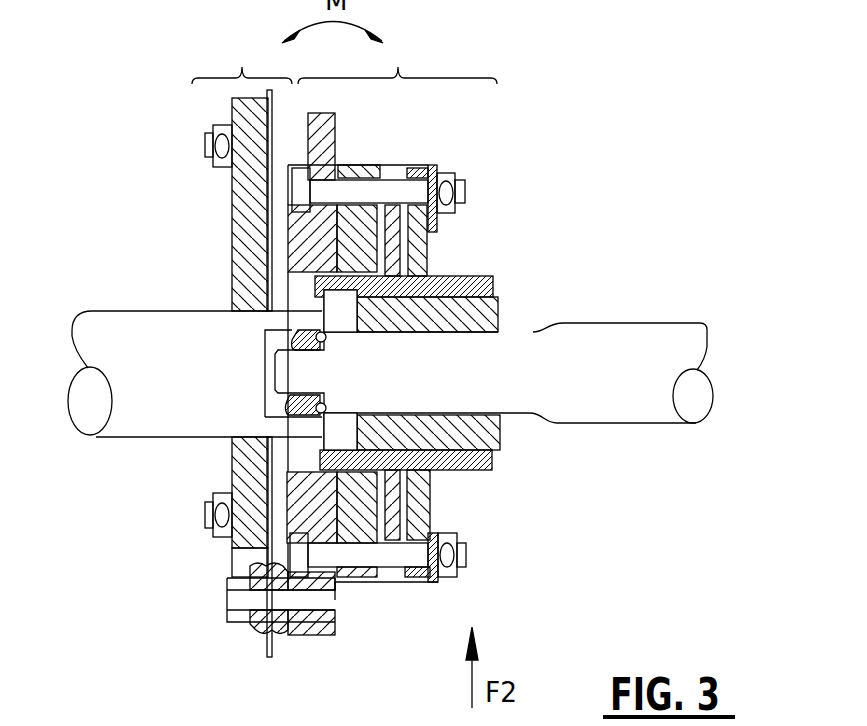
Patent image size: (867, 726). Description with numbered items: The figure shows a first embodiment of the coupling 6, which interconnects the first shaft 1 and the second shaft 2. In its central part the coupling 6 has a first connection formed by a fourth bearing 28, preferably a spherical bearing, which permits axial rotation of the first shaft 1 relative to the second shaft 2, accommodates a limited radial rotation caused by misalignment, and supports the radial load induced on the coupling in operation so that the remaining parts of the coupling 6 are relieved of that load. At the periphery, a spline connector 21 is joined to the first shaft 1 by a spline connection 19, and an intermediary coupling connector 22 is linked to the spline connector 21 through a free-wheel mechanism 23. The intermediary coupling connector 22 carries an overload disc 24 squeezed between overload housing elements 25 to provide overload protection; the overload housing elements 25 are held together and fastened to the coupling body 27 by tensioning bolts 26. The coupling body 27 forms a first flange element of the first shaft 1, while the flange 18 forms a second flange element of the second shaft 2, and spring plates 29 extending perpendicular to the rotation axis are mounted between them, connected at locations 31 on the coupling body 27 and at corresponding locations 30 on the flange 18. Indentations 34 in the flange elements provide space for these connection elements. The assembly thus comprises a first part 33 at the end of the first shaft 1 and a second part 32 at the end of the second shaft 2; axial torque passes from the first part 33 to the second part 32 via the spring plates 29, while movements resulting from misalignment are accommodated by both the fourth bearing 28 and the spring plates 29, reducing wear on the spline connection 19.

The first shaft 1 is at (635, 402).
The second shaft 2 is at (135, 412).
The coupling 6 is at (570, 125).
The flange 18 is at (253, 237).
The spline connection 19 is at (455, 332).
The spline connector 21 is at (483, 416).
The intermediary coupling connector 22 is at (417, 257).
The free-wheel mechanism 23 is at (465, 456).
The overload disc 24 is at (388, 505).
The overload housing elements 25 is at (360, 241).
The tensioning bolts 26 is at (365, 192).
The coupling body 27 is at (312, 630).
The fourth bearing 28 is at (290, 345).
The spring plates 29 is at (270, 116).
The locations and connections of the spring plates at the second flange element 30 is at (225, 140).
The locations and connections of the spring plates at the first flange element 31 is at (238, 602).
The second part 32 is at (242, 60).
The first part 33 is at (397, 60).
The indentations 34 is at (305, 145).